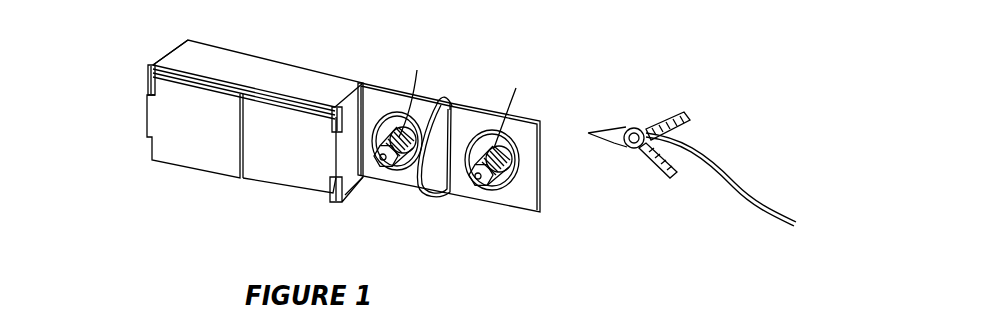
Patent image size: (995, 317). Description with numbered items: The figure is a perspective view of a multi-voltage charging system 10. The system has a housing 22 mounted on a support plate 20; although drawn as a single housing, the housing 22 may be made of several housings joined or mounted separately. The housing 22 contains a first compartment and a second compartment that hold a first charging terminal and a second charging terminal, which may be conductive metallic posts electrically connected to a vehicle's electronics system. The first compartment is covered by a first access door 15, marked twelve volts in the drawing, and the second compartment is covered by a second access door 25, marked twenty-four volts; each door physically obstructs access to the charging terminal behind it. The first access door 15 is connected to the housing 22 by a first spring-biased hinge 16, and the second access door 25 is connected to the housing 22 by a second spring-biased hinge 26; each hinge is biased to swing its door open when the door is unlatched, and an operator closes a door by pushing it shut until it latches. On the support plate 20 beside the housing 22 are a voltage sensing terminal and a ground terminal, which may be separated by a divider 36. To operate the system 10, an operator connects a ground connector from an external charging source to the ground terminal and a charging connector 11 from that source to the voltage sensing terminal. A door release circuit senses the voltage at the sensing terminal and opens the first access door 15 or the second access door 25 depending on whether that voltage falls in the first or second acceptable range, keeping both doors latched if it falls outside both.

The multi-voltage charging system 10 is at (113, 92).
The charging connector 11 is at (614, 150).
The first access door 15 is at (203, 90).
The first spring-biased hinge 16 is at (150, 62).
The support plate 20 is at (530, 203).
The housing 22 is at (185, 42).
The second access door 25 is at (288, 113).
The second spring-biased hinge 26 is at (333, 100).
The divider 36 is at (443, 100).